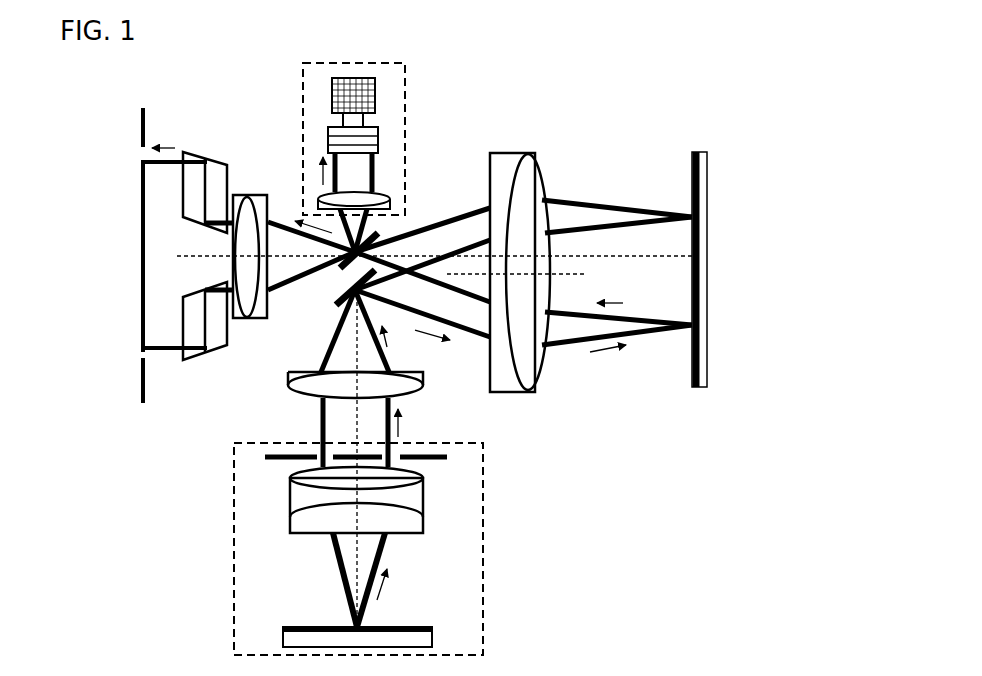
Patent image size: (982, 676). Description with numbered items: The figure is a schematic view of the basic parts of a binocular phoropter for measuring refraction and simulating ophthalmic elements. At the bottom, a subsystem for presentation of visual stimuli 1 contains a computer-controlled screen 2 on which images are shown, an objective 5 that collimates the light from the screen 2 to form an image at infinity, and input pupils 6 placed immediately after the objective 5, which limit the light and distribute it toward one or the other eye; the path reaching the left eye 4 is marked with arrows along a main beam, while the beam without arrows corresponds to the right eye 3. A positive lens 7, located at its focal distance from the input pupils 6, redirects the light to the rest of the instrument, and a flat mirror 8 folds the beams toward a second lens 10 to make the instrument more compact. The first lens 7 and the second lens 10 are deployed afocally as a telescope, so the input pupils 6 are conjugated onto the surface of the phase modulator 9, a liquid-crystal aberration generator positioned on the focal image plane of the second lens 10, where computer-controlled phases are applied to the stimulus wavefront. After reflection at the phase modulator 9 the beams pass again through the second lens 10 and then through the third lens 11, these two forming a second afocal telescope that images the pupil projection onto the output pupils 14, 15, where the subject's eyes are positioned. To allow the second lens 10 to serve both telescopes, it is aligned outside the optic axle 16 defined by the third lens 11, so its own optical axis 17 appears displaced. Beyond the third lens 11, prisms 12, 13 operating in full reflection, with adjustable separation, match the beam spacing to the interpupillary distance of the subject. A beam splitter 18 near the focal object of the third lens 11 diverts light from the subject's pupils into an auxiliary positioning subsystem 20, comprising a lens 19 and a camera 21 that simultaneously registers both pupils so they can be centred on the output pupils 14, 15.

The subsystem for presentation of visual stimuli 1 is at (232, 465).
The screen 2 is at (283, 636).
The right eye 3 is at (333, 568).
The left eye 4 is at (388, 552).
The objective 5 is at (427, 520).
The input pupils 6 is at (447, 460).
The positive lens 7 is at (425, 392).
The flat mirror 8 is at (335, 305).
The phase modulator 9 is at (691, 152).
The second lens 10 is at (517, 151).
The third lens 11 is at (252, 322).
The prism 12 is at (200, 362).
The prism 13 is at (198, 152).
The output pupil 14 is at (140, 160).
The output pupil 15 is at (140, 348).
The optic axle 16 is at (190, 262).
The optical axis 17 is at (587, 274).
The beam splitter 18 is at (383, 232).
The lens 19 is at (384, 188).
The auxiliary positioning subsystem 20 is at (300, 80).
The camera 21 is at (379, 95).